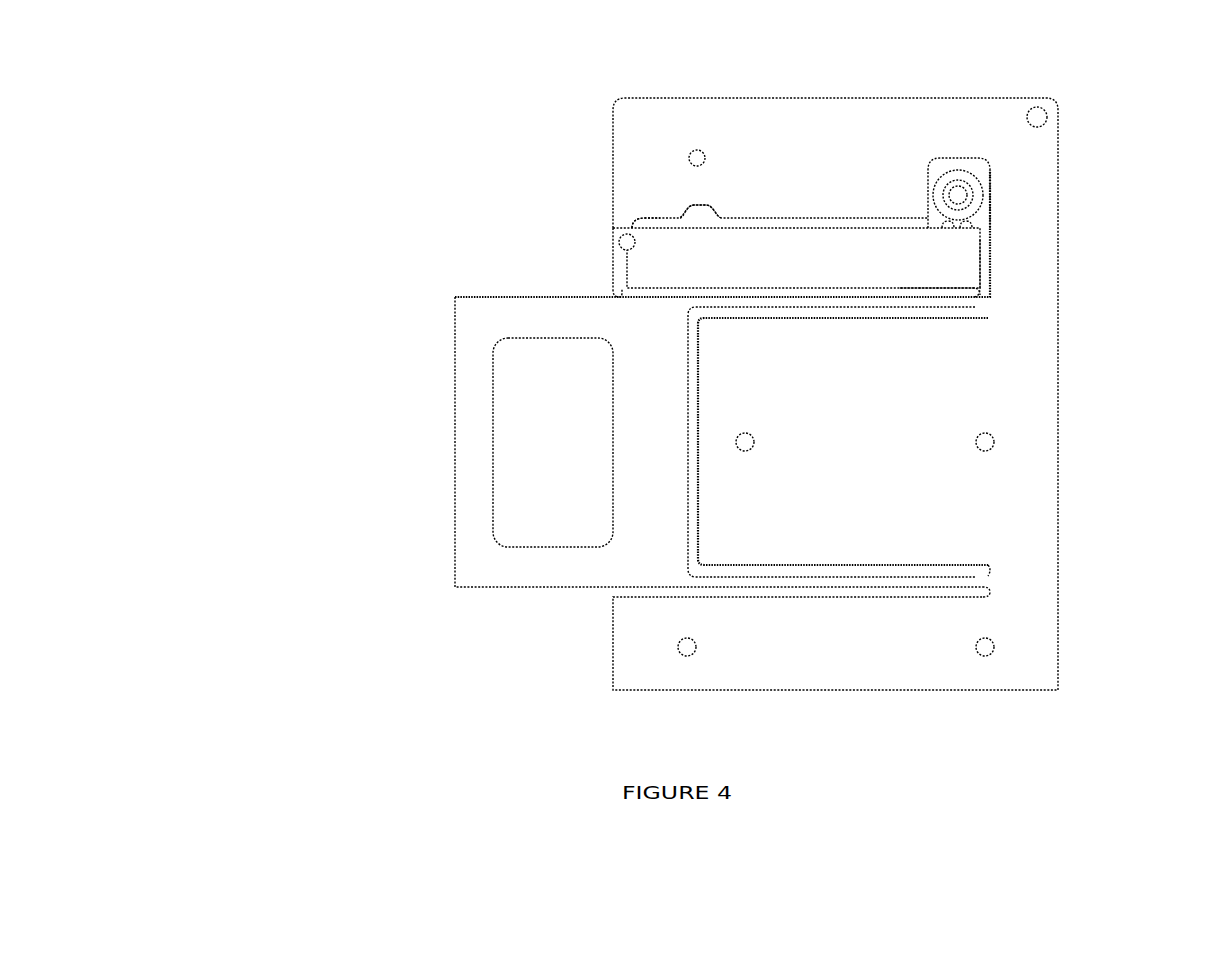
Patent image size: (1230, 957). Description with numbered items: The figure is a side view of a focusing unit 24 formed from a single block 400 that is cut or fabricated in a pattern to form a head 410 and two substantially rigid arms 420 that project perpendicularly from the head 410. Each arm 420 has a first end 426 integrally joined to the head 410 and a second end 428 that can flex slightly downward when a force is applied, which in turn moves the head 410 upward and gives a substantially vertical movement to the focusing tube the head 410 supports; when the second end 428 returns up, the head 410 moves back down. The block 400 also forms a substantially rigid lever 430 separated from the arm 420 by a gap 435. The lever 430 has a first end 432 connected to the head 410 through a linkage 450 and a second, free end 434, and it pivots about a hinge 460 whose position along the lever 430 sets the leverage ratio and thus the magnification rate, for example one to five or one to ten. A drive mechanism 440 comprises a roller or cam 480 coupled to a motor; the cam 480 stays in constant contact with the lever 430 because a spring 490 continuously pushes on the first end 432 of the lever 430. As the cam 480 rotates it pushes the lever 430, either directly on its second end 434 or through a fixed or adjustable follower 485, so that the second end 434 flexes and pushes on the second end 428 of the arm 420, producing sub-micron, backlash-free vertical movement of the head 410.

The focusing unit 24 is at (272, 122).
The block 400 is at (748, 70).
The head 410 is at (483, 537).
The substantially rigid arm 420 is at (812, 304).
The first end of arm 426 is at (688, 303).
The second end of arm 428 is at (975, 306).
The substantially rigid lever 430 is at (852, 258).
The first end of lever 432 is at (655, 263).
The second end of lever 434 is at (955, 266).
The gap 435 is at (940, 296).
The drive mechanism 440 is at (998, 185).
The linkage 450 is at (614, 271).
The hinge 460 is at (692, 212).
The cam 480 is at (960, 197).
The follower 485 is at (972, 226).
The spring 490 is at (625, 222).